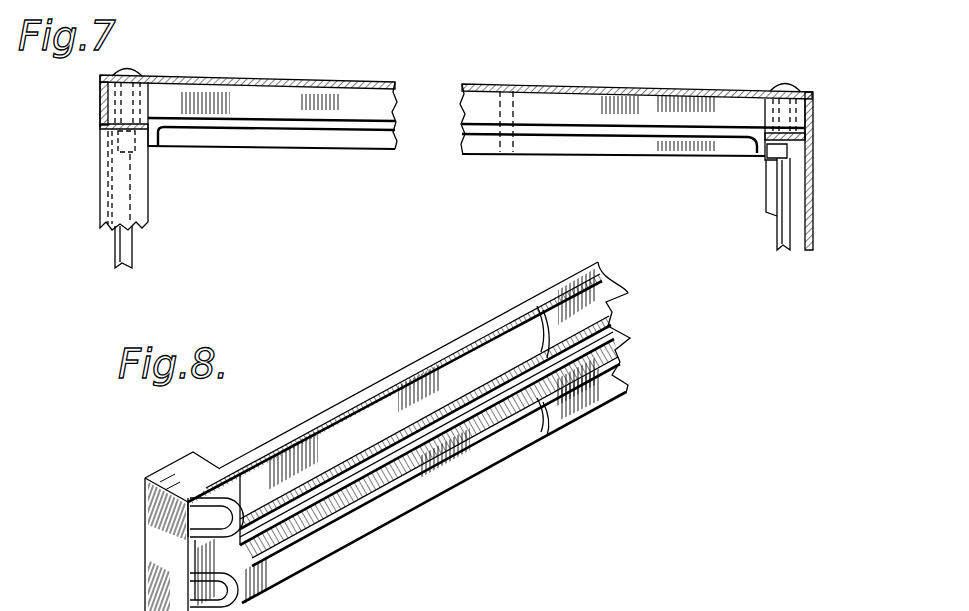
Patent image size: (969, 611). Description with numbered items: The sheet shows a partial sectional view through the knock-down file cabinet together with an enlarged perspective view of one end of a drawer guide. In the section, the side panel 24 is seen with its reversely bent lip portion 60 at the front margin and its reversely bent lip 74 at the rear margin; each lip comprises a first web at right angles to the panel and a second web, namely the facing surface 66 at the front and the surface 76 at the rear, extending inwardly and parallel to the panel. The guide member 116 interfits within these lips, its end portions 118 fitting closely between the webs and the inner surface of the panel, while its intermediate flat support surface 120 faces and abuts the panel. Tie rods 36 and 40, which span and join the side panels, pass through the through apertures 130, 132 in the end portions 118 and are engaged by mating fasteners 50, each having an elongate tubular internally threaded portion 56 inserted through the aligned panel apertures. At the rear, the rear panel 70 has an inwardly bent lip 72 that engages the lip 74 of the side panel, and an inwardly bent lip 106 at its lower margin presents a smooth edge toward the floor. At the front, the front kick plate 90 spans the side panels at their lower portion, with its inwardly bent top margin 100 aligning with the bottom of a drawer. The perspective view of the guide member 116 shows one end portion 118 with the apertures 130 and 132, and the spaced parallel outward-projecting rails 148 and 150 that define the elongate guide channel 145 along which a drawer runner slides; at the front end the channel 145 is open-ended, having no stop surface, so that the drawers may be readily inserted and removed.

In FIG. 7, the side panel 24 is at (264, 52).
In FIG. 7, the tie rod 36 is at (777, 232).
In FIG. 7, the tie rod 40 is at (133, 244).
In FIG. 7, the mating fastener 50 is at (133, 74).
In FIG. 7, the tubular internally threaded portion 56 is at (766, 160).
In FIG. 7, the reversely bent lip portion 60 is at (100, 102).
In FIG. 7, the facing surface 66 is at (120, 137).
In FIG. 7, the rear panel 70 is at (813, 208).
In FIG. 7, the inwardly bent lip 72 is at (810, 156).
In FIG. 7, the reversely bent lip 74 is at (815, 94).
In FIG. 7, the surface 76 is at (813, 118).
In FIG. 7, the front kick plate 90 is at (100, 186).
In FIG. 7, the inwardly bent top margin 100 is at (146, 190).
In FIG. 7, the inwardly bent lip 106 is at (767, 192).
In FIG. 7, the guide member 116 is at (468, 98).
In FIG. 8, the guide member 116 is at (292, 427).
In FIG. 8, the end portion 118 is at (160, 456).
In FIG. 7, the flat support surface 120 is at (330, 71).
In FIG. 8, the through aperture 130 is at (195, 514).
In FIG. 8, the through aperture 132 is at (200, 598).
In FIG. 8, the guide channel 145 is at (293, 528).
In FIG. 7, the rail 148 is at (296, 148).
In FIG. 8, the rail 148 is at (366, 494).
In FIG. 8, the rail 150 is at (345, 462).